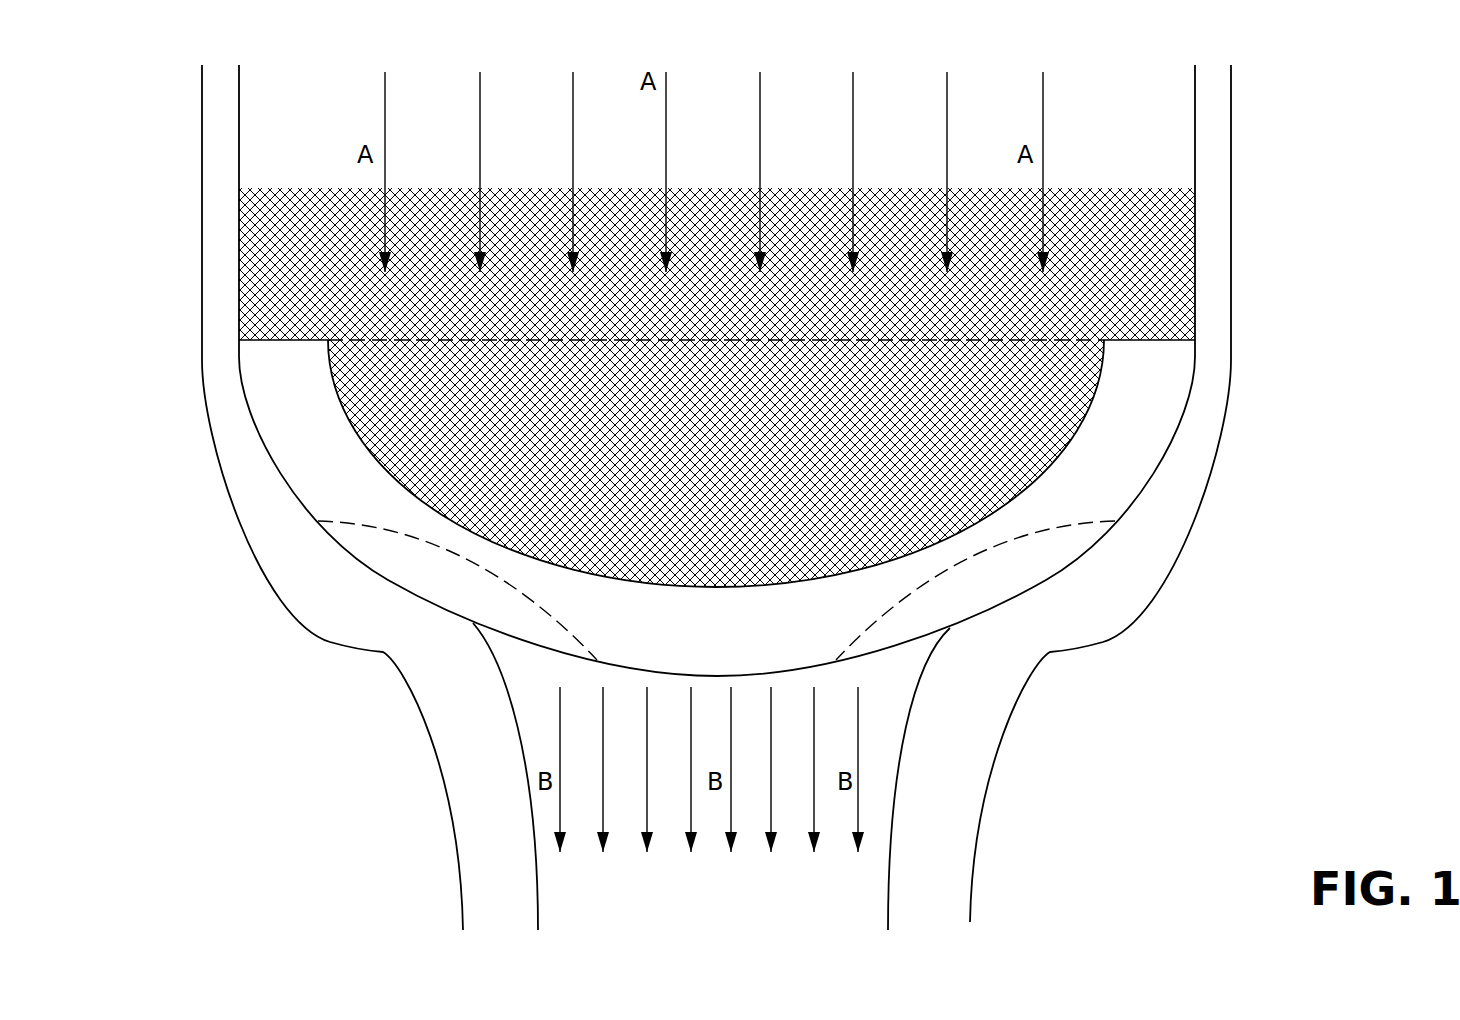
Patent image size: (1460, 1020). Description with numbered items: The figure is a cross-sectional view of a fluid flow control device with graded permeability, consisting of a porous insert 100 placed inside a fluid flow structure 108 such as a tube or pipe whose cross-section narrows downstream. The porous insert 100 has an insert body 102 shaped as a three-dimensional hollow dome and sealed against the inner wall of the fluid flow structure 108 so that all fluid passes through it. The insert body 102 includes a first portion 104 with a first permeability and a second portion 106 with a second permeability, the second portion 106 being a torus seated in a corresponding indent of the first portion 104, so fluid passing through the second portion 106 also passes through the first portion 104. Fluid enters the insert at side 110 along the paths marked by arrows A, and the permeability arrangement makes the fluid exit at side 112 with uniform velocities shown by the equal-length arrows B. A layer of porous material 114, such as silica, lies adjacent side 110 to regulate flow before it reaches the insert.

The porous insert 100 is at (1190, 470).
The insert body 102 is at (1180, 435).
The first portion 104 is at (283, 438).
The second portion 106 is at (508, 613).
The fluid flow structure 108 is at (1235, 207).
The side 110 is at (717, 570).
The side 112 is at (670, 688).
The porous material 114 is at (230, 267).